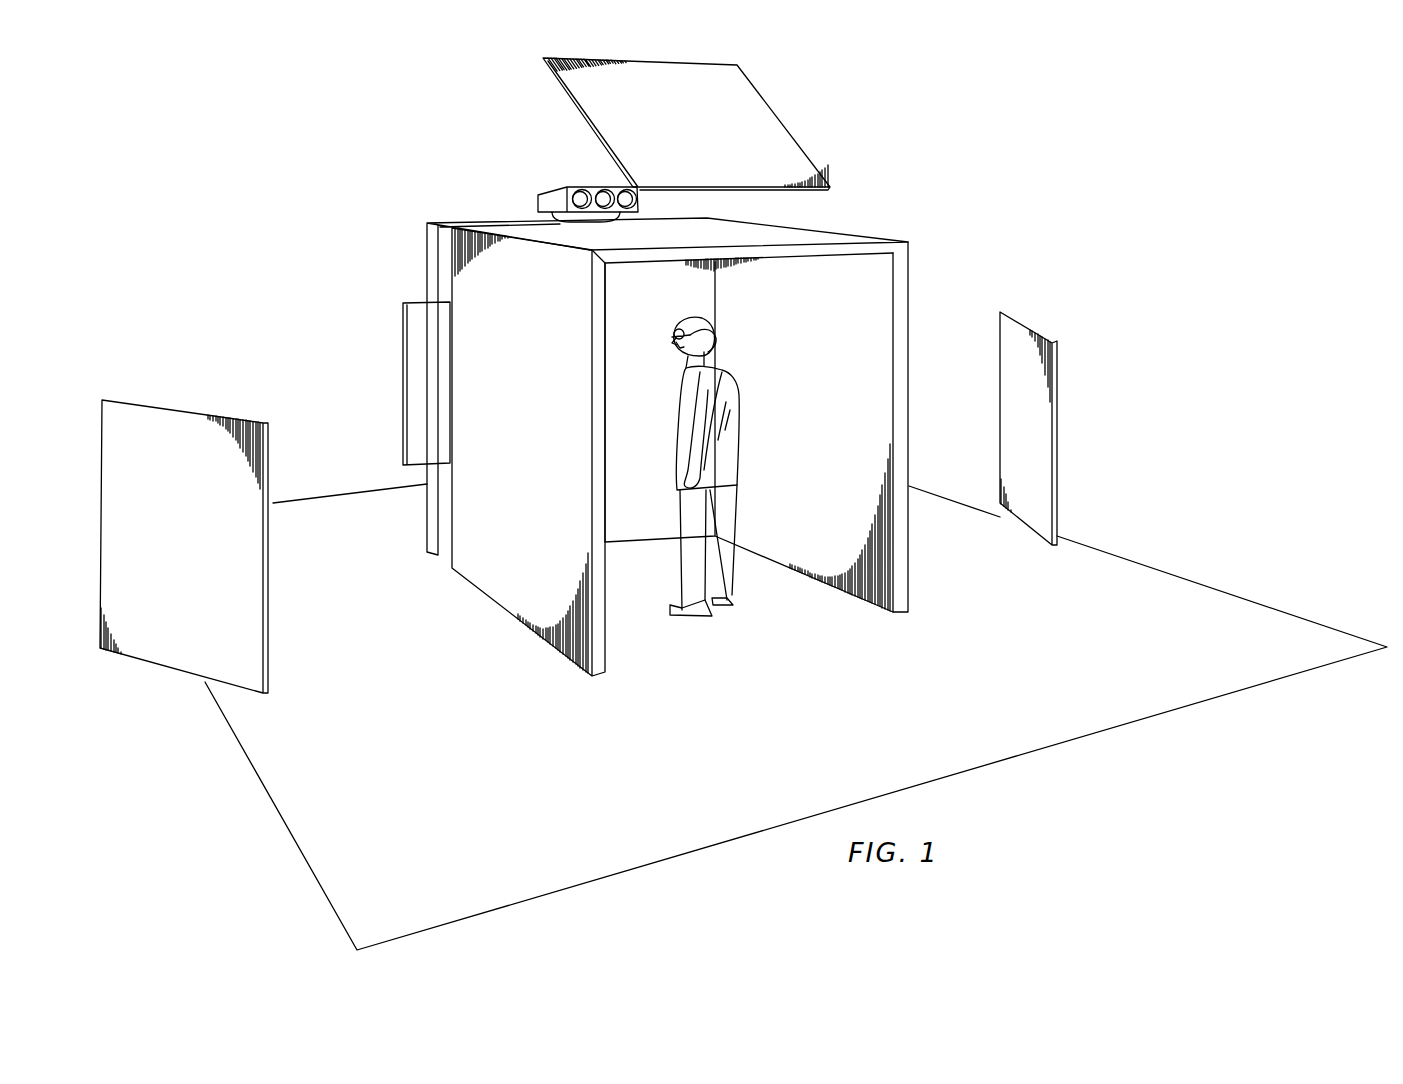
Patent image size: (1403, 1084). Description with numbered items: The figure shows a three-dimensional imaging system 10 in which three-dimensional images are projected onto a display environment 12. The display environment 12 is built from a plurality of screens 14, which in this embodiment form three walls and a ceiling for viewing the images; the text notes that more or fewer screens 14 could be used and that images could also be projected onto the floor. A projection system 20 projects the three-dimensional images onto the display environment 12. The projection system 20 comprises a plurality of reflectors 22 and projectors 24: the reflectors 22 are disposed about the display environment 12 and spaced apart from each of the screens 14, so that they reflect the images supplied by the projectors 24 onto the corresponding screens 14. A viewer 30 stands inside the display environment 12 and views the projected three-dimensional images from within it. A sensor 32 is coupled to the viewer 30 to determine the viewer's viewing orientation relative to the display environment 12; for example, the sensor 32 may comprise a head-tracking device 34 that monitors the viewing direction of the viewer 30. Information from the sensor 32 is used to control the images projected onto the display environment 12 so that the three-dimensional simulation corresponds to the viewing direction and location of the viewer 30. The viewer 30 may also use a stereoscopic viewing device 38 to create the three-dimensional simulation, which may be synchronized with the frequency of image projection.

The three-dimensional imaging system 10 is at (181, 833).
The display environment 12 is at (939, 287).
The screens 14 is at (818, 237).
The projection system 20 is at (474, 177).
The reflectors 22 is at (763, 110).
The projectors 24 is at (553, 197).
The viewer 30 is at (735, 417).
The sensor 32 is at (675, 338).
The head-tracking device 34 is at (699, 327).
The stereoscopic viewing device 38 is at (677, 343).